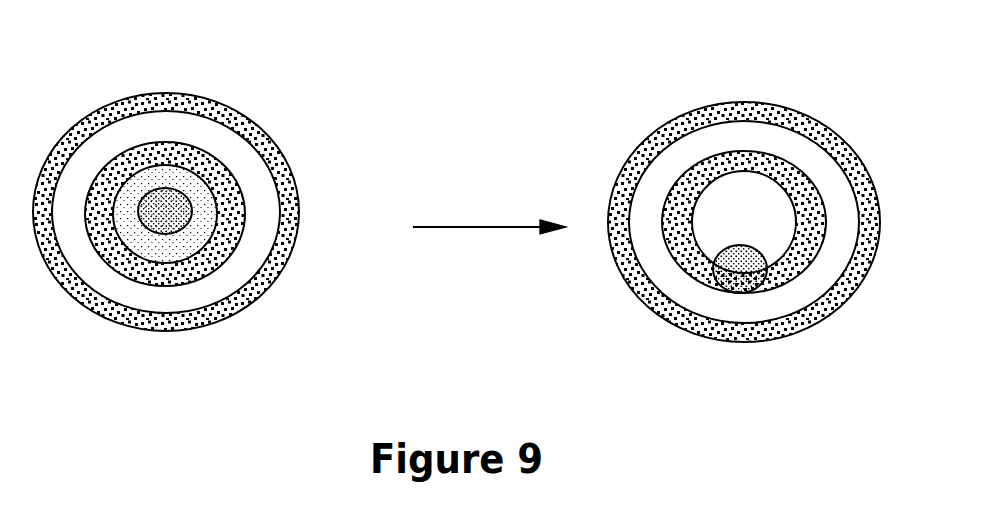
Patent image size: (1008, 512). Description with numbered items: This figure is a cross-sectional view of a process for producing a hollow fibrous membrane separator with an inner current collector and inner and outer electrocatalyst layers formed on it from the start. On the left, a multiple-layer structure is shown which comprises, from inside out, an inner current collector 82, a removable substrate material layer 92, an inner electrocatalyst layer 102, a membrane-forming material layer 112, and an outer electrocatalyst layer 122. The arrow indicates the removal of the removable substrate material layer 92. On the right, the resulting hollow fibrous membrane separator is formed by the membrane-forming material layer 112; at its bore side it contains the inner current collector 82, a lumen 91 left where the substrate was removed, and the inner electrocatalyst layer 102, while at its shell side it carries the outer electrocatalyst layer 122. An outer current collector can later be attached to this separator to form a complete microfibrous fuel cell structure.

The inner current collector 82 is at (165, 210).
The lumen 91 is at (746, 212).
The removable substrate material layer 92 is at (205, 218).
The inner electrocatalyst layer 102 is at (210, 258).
The membrane-forming material layer 112 is at (162, 123).
The outer electrocatalyst layer 122 is at (110, 110).